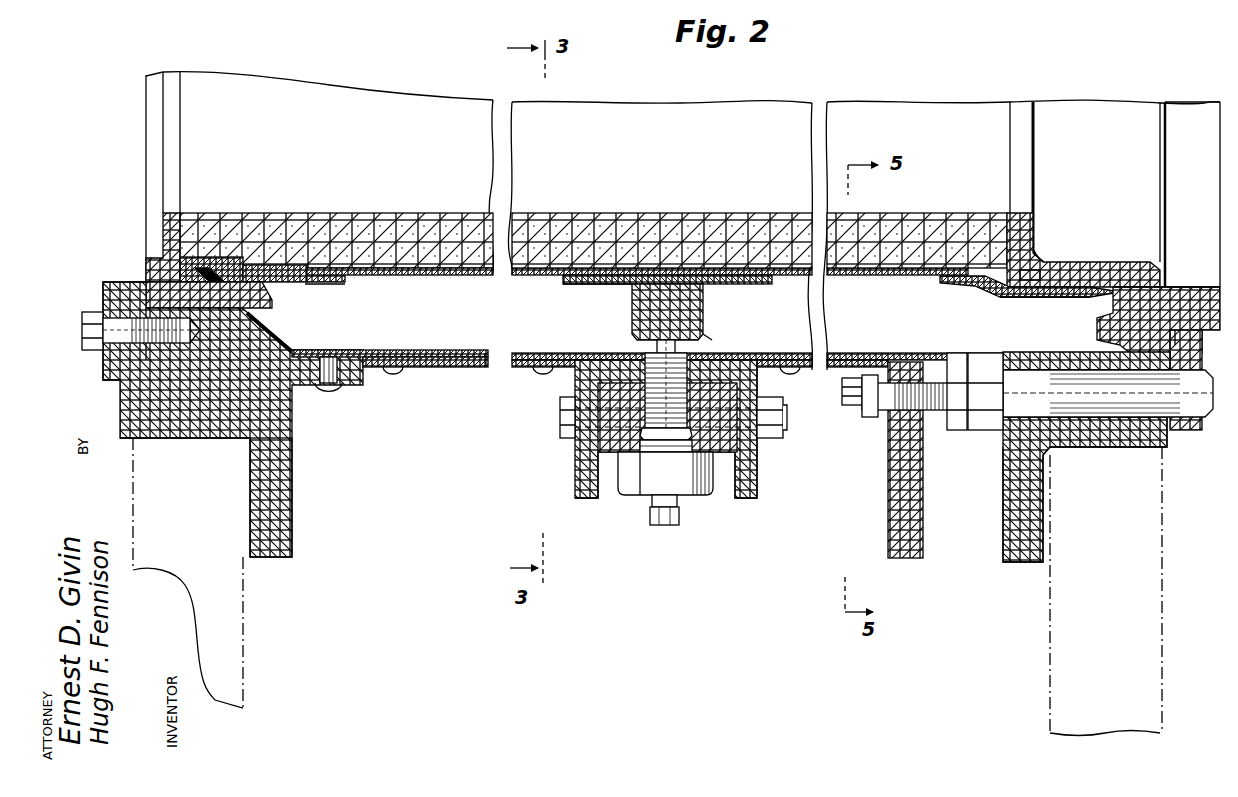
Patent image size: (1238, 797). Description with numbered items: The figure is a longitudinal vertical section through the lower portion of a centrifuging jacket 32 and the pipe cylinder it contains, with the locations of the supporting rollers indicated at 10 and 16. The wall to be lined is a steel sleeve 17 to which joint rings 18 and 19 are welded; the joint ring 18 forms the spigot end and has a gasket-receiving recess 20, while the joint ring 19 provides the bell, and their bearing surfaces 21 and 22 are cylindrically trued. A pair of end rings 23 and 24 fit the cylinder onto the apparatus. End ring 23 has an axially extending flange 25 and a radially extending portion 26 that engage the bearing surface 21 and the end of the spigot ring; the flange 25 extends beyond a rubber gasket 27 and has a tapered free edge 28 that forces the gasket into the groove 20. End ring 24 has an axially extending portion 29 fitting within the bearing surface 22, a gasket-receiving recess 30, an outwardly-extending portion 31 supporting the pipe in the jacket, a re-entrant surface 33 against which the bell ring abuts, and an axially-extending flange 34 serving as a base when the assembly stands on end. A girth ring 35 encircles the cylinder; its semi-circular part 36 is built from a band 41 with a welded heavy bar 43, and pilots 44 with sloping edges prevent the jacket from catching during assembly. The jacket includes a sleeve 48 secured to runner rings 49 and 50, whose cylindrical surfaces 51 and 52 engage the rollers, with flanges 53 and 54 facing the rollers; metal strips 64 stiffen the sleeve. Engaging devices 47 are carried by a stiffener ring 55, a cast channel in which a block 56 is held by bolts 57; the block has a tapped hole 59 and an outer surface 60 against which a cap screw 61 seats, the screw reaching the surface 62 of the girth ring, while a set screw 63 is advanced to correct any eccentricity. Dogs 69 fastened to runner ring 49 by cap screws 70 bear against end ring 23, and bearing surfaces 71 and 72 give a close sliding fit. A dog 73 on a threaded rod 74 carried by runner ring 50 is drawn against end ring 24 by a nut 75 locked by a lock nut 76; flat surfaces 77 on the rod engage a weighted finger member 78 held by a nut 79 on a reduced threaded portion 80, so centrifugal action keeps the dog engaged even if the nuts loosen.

The roller 10 is at (232, 605).
The roller 16 is at (1078, 630).
The steel sleeve 17 is at (443, 276).
The joint ring 18 is at (296, 284).
The joint ring 19 is at (1005, 298).
The gasket-receiving recess 20 is at (203, 273).
The bearing surface 21 is at (262, 285).
The bearing surface 22 is at (1068, 275).
The end ring 23 is at (145, 219).
The end ring 24 is at (1122, 93).
The axially extending flange 25 is at (250, 315).
The radially extending portion 26 is at (167, 215).
The rubber gasket 27 is at (219, 280).
The tapered free edge 28 is at (245, 277).
The axially extending portion 29 is at (1097, 268).
The gasket-receiving recess 30 is at (1040, 262).
The outwardly-extending portion 31 is at (1170, 293).
The jacket 32 is at (462, 375).
The re-entrant surface 33 is at (1153, 262).
The axially-extending flange 34 is at (1205, 293).
The girth ring 35 is at (723, 292).
The semi-circular part 36 is at (602, 335).
The band of metal 41 is at (563, 279).
The heavy bar 43 is at (642, 300).
The pilot 44 is at (590, 292).
The engaging device 47 is at (701, 518).
The sleeve 48 is at (417, 349).
The runner ring 49 is at (120, 403).
The runner ring 50 is at (1130, 448).
The cylindrical surface 51 is at (198, 443).
The cylindrical surface 52 is at (1078, 450).
The flange 53 is at (280, 524).
The flange 54 is at (1003, 545).
The stiffener ring 55 is at (743, 483).
The block 56 is at (725, 442).
The bolt 57 is at (560, 420).
The tapped hole 59 is at (690, 425).
The outer surface 60 is at (612, 455).
The cap screw 61 is at (630, 488).
The surface of the girth ring 62 is at (680, 356).
The set screw 63 is at (662, 522).
The strip of metal 64 is at (418, 367).
The dog 69 is at (103, 287).
The cap screw 70 is at (82, 332).
The bearing surface 71 is at (160, 300).
The bearing surface 72 is at (1100, 338).
The dog 73 is at (1192, 358).
The threaded rod 74 is at (1108, 393).
The nut 75 is at (985, 432).
The lock nut 76 is at (950, 432).
The flat surfaces 77 is at (905, 405).
The finger member 78 is at (890, 500).
The nut 79 is at (858, 412).
The reduced threaded portion 80 is at (848, 392).